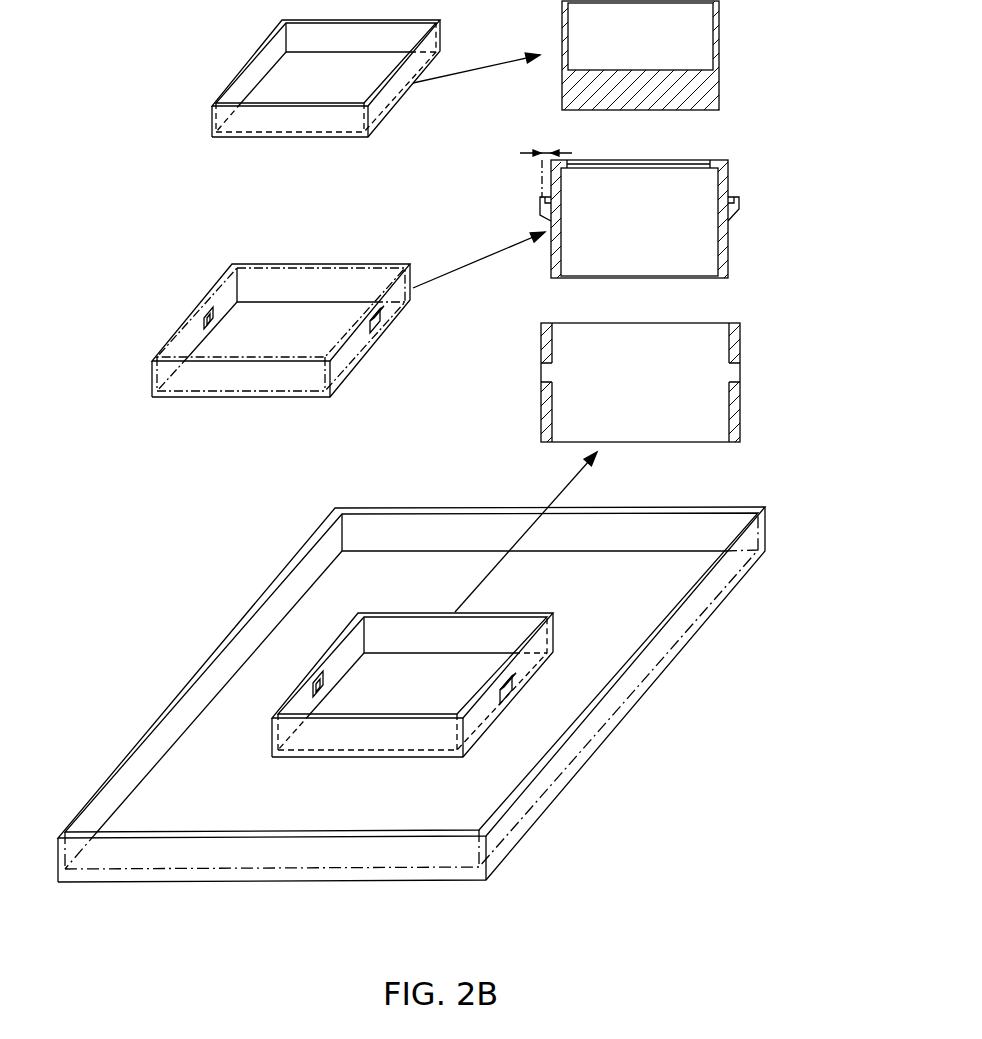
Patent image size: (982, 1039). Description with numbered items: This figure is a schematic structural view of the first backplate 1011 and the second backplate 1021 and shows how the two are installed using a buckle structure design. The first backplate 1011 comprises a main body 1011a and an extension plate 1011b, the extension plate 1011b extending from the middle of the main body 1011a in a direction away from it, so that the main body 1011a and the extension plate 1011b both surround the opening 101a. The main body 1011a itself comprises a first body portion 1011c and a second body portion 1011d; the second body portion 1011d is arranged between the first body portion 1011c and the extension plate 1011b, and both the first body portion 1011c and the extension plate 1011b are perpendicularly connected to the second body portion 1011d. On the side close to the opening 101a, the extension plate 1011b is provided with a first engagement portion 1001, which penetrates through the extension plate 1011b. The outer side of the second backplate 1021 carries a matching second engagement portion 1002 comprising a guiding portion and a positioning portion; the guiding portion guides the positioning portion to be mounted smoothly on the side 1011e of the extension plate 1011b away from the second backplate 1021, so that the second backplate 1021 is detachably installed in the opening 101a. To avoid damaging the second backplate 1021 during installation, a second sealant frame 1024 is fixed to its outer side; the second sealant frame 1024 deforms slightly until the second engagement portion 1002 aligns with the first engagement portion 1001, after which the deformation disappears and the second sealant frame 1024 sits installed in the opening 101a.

The second backplate 1021 is at (234, 81).
The second sealant frame 1024 is at (474, 267).
The second engagement portion 1002 is at (733, 207).
The first backplate 1011 is at (82, 600).
The main body 1011a is at (411, 694).
The first body portion 1011c is at (278, 590).
The second body portion 1011d is at (272, 658).
The extension plate 1011b is at (473, 537).
The opening 101a is at (407, 668).
The first engagement portion 1001 is at (735, 382).
The side of the extension plate 1011e is at (741, 423).